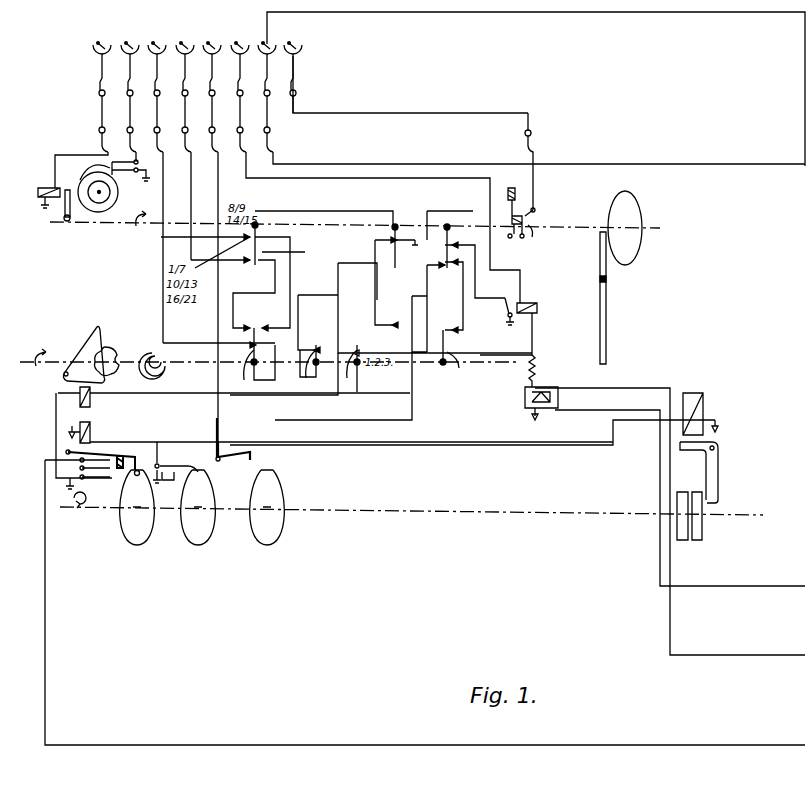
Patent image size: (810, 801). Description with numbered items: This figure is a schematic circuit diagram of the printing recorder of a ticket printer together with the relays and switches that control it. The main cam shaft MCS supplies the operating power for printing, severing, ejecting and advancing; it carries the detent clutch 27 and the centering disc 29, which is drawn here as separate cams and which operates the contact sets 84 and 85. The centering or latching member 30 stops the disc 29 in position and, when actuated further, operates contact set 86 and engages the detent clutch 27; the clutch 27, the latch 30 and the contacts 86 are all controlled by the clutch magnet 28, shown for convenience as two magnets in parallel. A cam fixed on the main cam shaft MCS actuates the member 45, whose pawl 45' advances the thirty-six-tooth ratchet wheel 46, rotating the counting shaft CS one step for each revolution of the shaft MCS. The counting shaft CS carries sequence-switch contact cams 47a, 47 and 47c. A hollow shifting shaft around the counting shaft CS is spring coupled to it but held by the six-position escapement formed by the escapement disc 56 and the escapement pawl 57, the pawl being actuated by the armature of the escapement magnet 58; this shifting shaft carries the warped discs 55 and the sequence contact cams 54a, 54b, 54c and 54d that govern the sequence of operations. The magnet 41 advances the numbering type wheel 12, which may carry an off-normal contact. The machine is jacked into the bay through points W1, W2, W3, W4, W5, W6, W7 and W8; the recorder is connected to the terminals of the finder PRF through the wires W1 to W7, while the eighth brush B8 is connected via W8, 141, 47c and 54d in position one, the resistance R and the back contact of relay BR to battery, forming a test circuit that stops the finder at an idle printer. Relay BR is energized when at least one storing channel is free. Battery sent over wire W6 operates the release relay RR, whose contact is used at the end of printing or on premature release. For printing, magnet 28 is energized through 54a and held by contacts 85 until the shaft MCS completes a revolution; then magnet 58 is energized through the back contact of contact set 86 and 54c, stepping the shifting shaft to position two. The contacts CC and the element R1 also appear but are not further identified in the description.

The numbering type wheel 12 is at (118, 193).
The numbering magnet 41 is at (44, 198).
The ratchet wheel 46 is at (627, 204).
The actuating member 45 is at (617, 281).
The pawl 45' is at (583, 298).
The test circuit element 141 is at (530, 222).
The contact cam 47 is at (393, 224).
The contact cam 47a is at (256, 224).
The contact cam 47c is at (448, 224).
The contact cam 54a is at (254, 375).
The contact cam 54b is at (309, 370).
The contact cam 54c is at (296, 379).
The contact cam 54d is at (452, 366).
The warped discs 55 is at (208, 365).
The escapement disc 56 is at (108, 343).
The escapement pawl 57 is at (100, 380).
The escapement magnet 58 is at (78, 398).
The clutch magnet 28 is at (697, 396).
The centering or latching member 30 is at (100, 455).
The detent clutch 27 is at (698, 492).
The centering disc 29 is at (130, 540).
The contact set 84 is at (228, 466).
The contact set 85 is at (165, 496).
The contact set 86 is at (100, 478).
The printing register finder PRF is at (173, 49).
The eighth brush B8 is at (310, 83).
The wire W1 is at (90, 121).
The wire W2 is at (140, 108).
The wire W3 is at (167, 198).
The wire W4 is at (195, 157).
The wire W5 is at (221, 248).
The wire W6 is at (249, 103).
The wire W7 is at (276, 103).
The wire W8 is at (544, 161).
The counting shaft CS is at (671, 231).
The release relay RR is at (534, 326).
The resistance R is at (519, 387).
The relay BR is at (549, 427).
The main cam shaft MCS is at (604, 512).
The contact CC is at (175, 462).
The lamp R1 is at (264, 495).